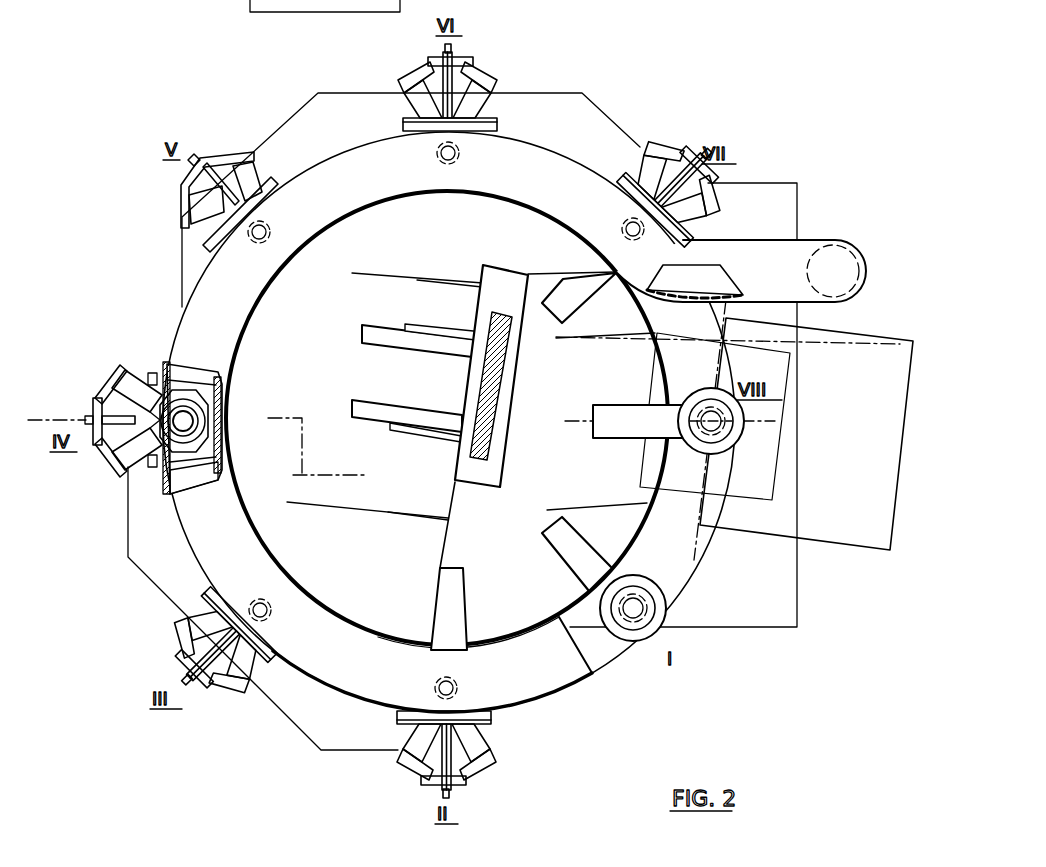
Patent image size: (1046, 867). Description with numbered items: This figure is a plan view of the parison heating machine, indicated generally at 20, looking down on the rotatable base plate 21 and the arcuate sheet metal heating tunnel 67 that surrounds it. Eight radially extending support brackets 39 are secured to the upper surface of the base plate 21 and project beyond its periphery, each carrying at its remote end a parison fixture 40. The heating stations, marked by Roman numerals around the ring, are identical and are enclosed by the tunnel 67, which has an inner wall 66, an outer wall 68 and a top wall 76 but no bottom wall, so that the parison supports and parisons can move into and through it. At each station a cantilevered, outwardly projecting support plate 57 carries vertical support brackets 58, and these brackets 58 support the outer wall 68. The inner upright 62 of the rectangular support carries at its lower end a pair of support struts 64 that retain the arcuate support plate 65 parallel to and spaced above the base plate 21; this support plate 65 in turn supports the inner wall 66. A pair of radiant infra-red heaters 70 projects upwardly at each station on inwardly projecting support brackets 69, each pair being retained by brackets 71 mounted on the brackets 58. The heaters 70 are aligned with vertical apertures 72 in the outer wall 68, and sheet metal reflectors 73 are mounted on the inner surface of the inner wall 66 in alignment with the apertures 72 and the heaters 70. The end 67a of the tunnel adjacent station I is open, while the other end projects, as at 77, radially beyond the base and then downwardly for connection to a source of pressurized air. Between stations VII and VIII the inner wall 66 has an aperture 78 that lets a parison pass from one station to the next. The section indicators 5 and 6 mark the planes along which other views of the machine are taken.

The cutting apparatus 20 is at (625, 110).
The support plate 57 is at (554, 93).
The vertical support brackets 58 is at (210, 153).
The inwardly projecting support brackets 69 is at (186, 195).
The radiant infra-red heaters 70 is at (248, 172).
The brackets 71 is at (178, 217).
The heating tunnel 67 is at (366, 188).
The open end of tunnel 67a is at (470, 664).
The top wall 76 is at (311, 231).
The outer wall 68 is at (184, 366).
The inner wall 66 is at (220, 394).
The vertical apertures 72 is at (185, 465).
The sheet metal reflectors 73 is at (222, 452).
The support plate 65 is at (312, 374).
The support struts 64 is at (408, 342).
The uprights 62 is at (492, 378).
The support brackets 39 is at (619, 413).
The base plate 21 is at (597, 499).
The parison fixture 40 is at (671, 590).
The projecting end of tunnel 77 is at (797, 258).
The aperture 78 is at (702, 303).
The section line 5 is at (40, 430).
The section line 6 is at (570, 403).